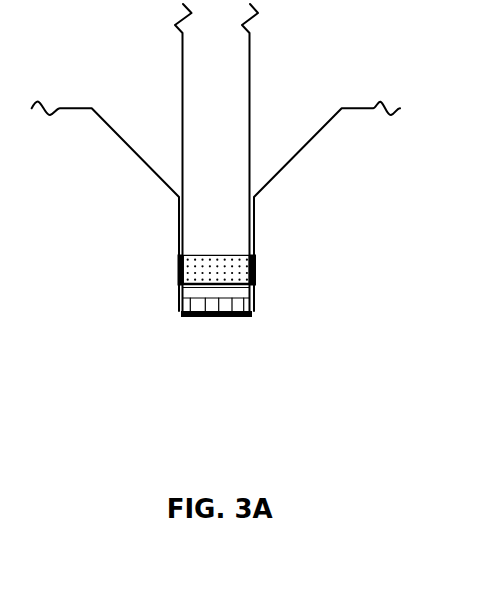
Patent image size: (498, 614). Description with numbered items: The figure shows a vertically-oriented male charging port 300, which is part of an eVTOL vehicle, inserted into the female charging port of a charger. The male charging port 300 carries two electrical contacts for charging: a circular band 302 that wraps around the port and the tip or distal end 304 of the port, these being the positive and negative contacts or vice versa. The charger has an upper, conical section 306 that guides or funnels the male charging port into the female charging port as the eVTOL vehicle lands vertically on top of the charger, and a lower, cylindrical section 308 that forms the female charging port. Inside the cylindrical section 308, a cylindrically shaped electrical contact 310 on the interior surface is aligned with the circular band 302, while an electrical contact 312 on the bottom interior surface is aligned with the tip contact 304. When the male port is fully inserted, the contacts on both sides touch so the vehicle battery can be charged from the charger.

The vertically-oriented male charging port 300 is at (254, 72).
The circular band 302 is at (212, 255).
The tip or distal end 304 is at (180, 307).
The upper, conical section 306 is at (143, 163).
The lower, cylindrical section 308 is at (254, 217).
The cylindrically shaped electrical contact 310 is at (256, 268).
The electrical contact 312 is at (215, 317).